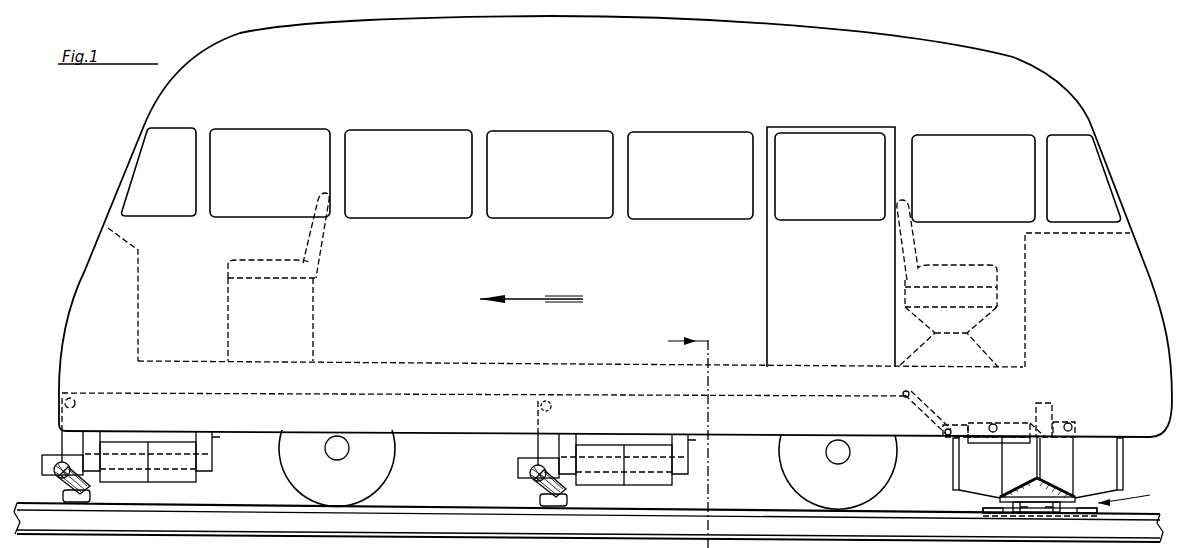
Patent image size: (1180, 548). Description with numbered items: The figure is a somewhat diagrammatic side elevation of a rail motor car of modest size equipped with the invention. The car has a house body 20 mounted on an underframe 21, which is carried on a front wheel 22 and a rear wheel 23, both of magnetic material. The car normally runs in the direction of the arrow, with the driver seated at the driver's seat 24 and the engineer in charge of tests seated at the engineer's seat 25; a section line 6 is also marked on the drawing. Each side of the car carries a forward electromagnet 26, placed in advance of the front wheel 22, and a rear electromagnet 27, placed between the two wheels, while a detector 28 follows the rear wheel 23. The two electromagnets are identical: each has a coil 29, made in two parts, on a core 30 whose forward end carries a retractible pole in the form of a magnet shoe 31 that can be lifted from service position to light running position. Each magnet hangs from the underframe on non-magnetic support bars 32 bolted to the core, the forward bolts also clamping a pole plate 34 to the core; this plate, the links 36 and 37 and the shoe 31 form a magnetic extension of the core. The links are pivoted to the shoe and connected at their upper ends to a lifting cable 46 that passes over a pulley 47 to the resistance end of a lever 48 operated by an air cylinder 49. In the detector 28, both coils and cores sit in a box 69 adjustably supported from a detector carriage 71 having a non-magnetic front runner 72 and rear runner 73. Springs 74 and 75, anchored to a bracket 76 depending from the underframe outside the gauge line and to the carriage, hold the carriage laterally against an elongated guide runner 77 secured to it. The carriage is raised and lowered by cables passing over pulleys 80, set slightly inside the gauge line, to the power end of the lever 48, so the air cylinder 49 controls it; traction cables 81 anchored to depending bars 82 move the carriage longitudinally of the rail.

The section line 6 is at (698, 442).
The house body 20 is at (1063, 102).
The underframe 21 is at (527, 366).
The front wheel 22 is at (391, 465).
The rear wheel 23 is at (880, 485).
The driver's seat 24 is at (262, 275).
The engineer's seat 25 is at (962, 265).
The forward electromagnet 26 is at (197, 483).
The rear electromagnet 27 is at (675, 488).
The detector 28 is at (1086, 473).
The coil 29 is at (158, 443).
The core 30 is at (156, 470).
The magnet shoe 31 is at (60, 495).
The support bars 32 is at (93, 440).
The pole plate 34 is at (55, 456).
The link 36 is at (58, 478).
The link 37 is at (86, 481).
The lifting cable 46 is at (62, 432).
The pulley 47 is at (77, 404).
The lever 48 is at (912, 394).
The air cylinder 49 is at (982, 444).
The box 69 is at (1036, 513).
The detector carriage 71 is at (1000, 500).
The front runner 72 is at (990, 514).
The rear runner 73 is at (1075, 514).
The spring 74 is at (1026, 488).
The spring 75 is at (1052, 487).
The bracket 76 is at (1040, 465).
The guide runner 77 is at (1080, 514).
The pulleys 80 is at (994, 424).
The traction cables 81 is at (983, 493).
The depending bars 82 is at (953, 462).